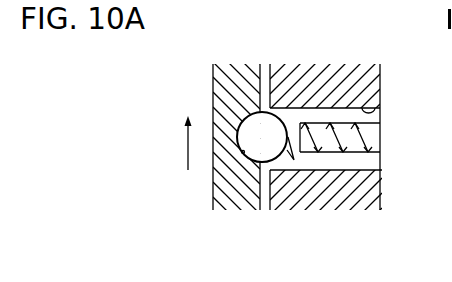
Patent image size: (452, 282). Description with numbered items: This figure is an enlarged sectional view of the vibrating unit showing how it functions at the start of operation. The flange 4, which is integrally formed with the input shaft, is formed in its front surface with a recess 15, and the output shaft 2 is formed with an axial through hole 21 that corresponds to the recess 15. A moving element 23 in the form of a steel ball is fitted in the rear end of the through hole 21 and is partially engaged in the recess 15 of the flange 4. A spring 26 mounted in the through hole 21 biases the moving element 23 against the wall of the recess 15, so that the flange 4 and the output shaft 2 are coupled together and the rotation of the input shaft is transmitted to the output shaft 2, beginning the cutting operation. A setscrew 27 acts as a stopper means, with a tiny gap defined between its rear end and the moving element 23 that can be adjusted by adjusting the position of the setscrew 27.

The output shaft 2 is at (316, 70).
The flange 4 is at (233, 65).
The recess 15 is at (245, 160).
The through hole 21 is at (378, 106).
The moving element 23 is at (255, 133).
The spring 26 is at (317, 158).
The setscrew 27 is at (352, 147).